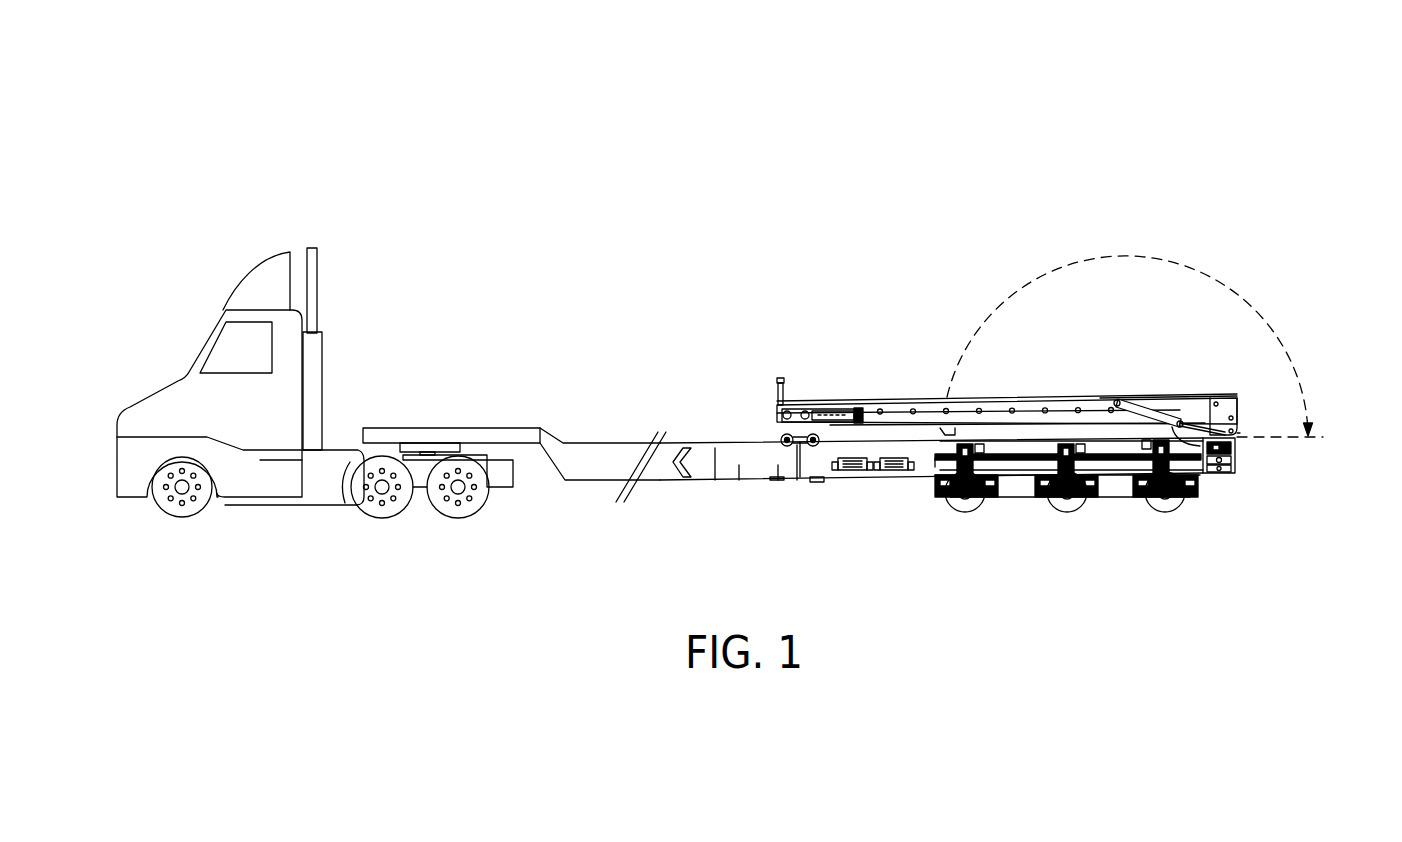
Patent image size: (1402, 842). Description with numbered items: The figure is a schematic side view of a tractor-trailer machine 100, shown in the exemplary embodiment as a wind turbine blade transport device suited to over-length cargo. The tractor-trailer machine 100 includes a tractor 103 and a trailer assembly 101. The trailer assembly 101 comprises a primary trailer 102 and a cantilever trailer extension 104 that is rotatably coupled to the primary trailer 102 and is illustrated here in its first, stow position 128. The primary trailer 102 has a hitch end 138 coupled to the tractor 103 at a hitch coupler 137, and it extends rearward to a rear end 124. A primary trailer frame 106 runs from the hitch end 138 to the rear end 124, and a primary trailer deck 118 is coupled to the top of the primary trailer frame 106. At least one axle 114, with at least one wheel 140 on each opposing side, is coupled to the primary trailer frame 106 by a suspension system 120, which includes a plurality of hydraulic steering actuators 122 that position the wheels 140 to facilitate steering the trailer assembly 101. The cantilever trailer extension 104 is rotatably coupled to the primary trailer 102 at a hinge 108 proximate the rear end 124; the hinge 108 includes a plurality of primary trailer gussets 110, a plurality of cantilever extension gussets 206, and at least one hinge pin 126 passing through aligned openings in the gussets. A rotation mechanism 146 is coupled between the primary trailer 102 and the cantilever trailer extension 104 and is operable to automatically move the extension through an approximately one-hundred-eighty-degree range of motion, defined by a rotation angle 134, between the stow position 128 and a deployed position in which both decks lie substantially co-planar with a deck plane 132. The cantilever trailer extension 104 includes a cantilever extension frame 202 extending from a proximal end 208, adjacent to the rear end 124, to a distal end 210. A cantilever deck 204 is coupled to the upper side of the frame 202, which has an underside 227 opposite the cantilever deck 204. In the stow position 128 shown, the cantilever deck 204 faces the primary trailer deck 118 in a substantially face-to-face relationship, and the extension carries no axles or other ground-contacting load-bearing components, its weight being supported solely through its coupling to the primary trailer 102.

The tractor-trailer machine 100 is at (856, 125).
The trailer assembly 101 is at (1162, 190).
The primary trailer 102 is at (540, 368).
The tractor 103 is at (165, 290).
The cantilever trailer extension 104 is at (881, 348).
The primary trailer frame 106 is at (658, 468).
The hinge 108 is at (1250, 476).
The primary trailer gussets 110 is at (1225, 473).
The axle 114 is at (960, 503).
The primary trailer deck 118 is at (617, 443).
The suspension system 120 is at (932, 478).
The hydraulic steering actuators 122 is at (1127, 450).
The rear end 124 is at (1250, 461).
The hinge pin 126 is at (1232, 430).
The stow position 128 is at (767, 290).
The deck plane 132 is at (1317, 438).
The rotation angle 134 is at (1085, 252).
The hitch coupler 137 is at (427, 452).
The hitch end 138 is at (411, 418).
The wheel 140 is at (957, 503).
The rotation mechanism 146 is at (1164, 378).
The cantilever extension frame 202 is at (888, 410).
The cantilever deck 204 is at (823, 407).
The cantilever extension gussets 206 is at (1210, 420).
The proximal end 208 is at (1250, 390).
The distal end 210 is at (756, 389).
The underside 227 is at (807, 405).